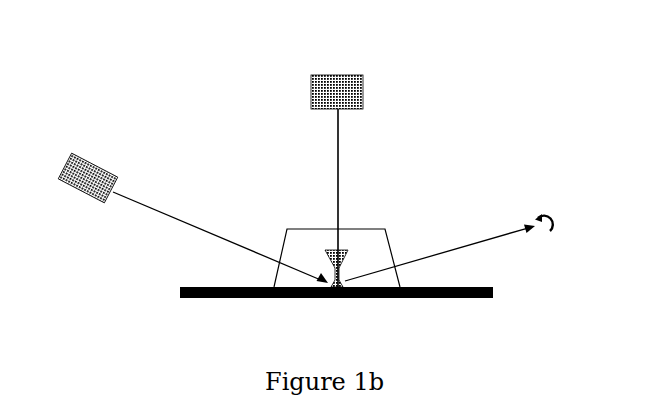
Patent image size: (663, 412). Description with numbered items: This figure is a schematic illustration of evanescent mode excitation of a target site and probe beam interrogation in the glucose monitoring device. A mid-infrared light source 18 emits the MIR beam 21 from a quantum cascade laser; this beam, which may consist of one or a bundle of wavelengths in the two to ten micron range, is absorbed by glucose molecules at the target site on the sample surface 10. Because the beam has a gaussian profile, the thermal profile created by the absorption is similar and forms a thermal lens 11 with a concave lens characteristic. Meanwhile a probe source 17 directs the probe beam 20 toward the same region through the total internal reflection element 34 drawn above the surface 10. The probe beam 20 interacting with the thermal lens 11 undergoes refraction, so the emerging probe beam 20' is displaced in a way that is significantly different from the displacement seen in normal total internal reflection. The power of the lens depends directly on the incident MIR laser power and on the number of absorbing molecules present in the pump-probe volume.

The substrate / sample surface 10 is at (468, 298).
The thermal lens 11 is at (355, 250).
The second source (laser) 17 is at (88, 168).
The first source (laser) 18 is at (337, 80).
The probe source/beam 20 is at (220, 229).
The reflected beam 20' is at (449, 247).
The MIR light source/beam 21 is at (351, 198).
The total internal reflection element 34 is at (320, 229).